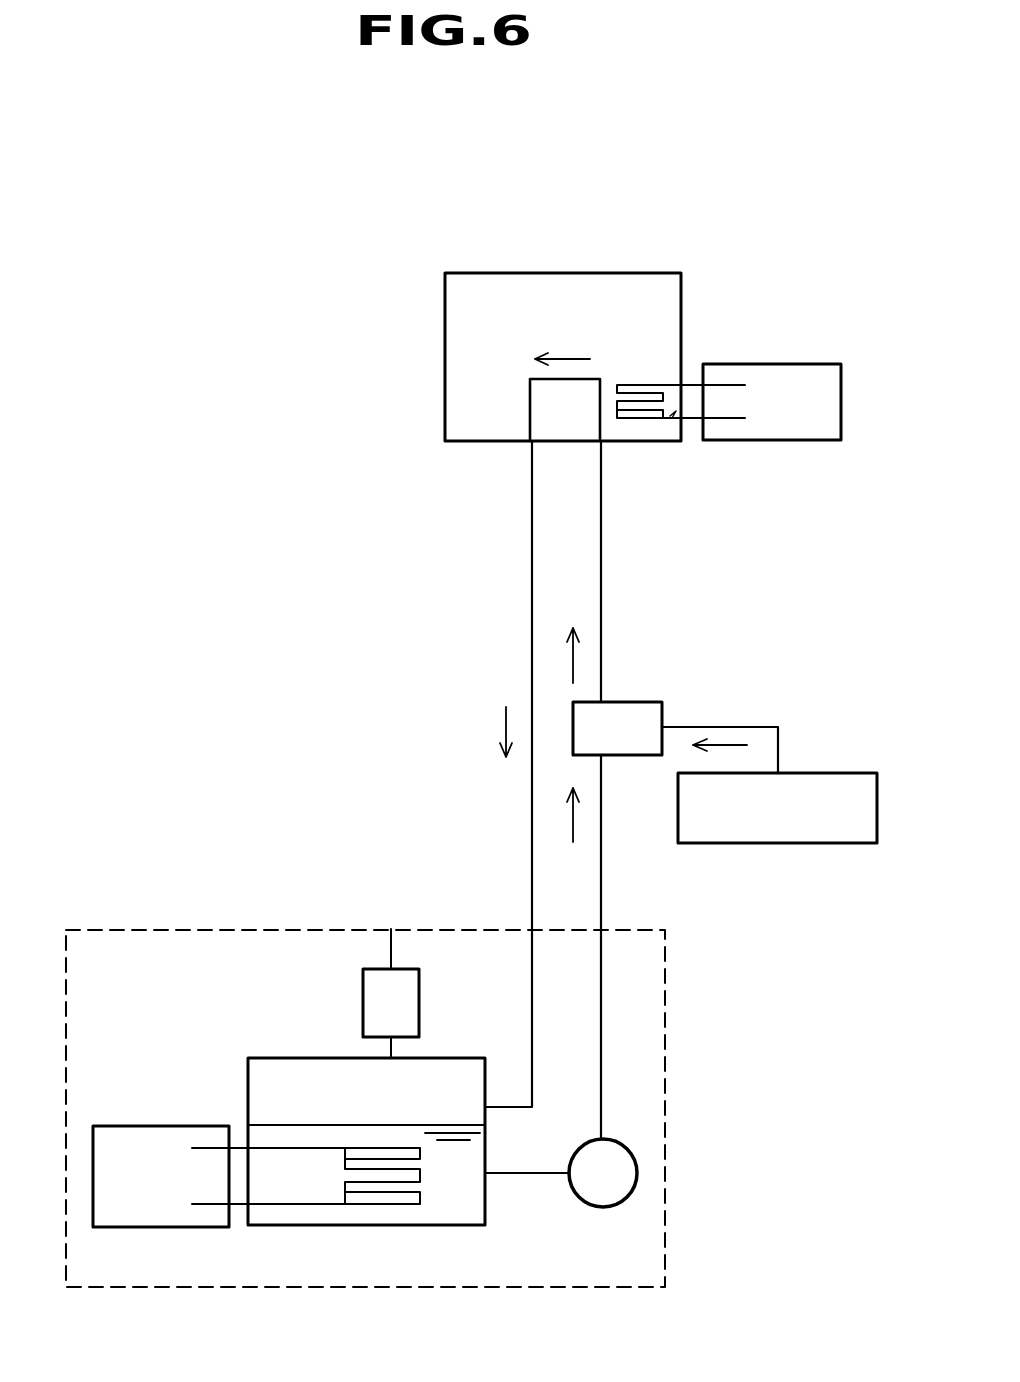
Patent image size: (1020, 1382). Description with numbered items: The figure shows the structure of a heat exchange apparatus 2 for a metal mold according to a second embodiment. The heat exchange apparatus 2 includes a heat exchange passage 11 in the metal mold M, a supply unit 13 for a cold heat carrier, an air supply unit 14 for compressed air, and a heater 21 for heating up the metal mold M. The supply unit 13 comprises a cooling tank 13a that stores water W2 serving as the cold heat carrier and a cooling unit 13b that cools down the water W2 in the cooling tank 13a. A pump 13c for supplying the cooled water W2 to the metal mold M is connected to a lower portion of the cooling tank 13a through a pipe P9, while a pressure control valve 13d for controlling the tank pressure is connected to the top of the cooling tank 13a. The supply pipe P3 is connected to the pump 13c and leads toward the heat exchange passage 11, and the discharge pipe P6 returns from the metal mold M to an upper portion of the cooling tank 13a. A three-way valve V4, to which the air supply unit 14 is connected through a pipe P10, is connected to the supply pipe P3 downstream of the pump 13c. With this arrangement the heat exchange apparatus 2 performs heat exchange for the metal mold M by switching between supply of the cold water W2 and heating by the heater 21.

The heat exchange apparatus 2 is at (285, 740).
The metal mold M is at (657, 314).
The heat exchange passage 11 is at (530, 422).
The heater 21 is at (817, 440).
The discharge pipe P6 is at (531, 538).
The supply pipe P3 is at (602, 537).
The three-way valve V4 is at (638, 702).
The pipe P10 is at (778, 752).
The air supply unit 14 is at (842, 773).
The supply unit 13 is at (112, 928).
The cooling tank 13a is at (275, 1060).
The cooling unit 13b is at (118, 1126).
The pump 13c is at (597, 1190).
The pressure control valve 13d is at (419, 990).
The water W2 is at (486, 1138).
The pipe P9 is at (528, 1175).